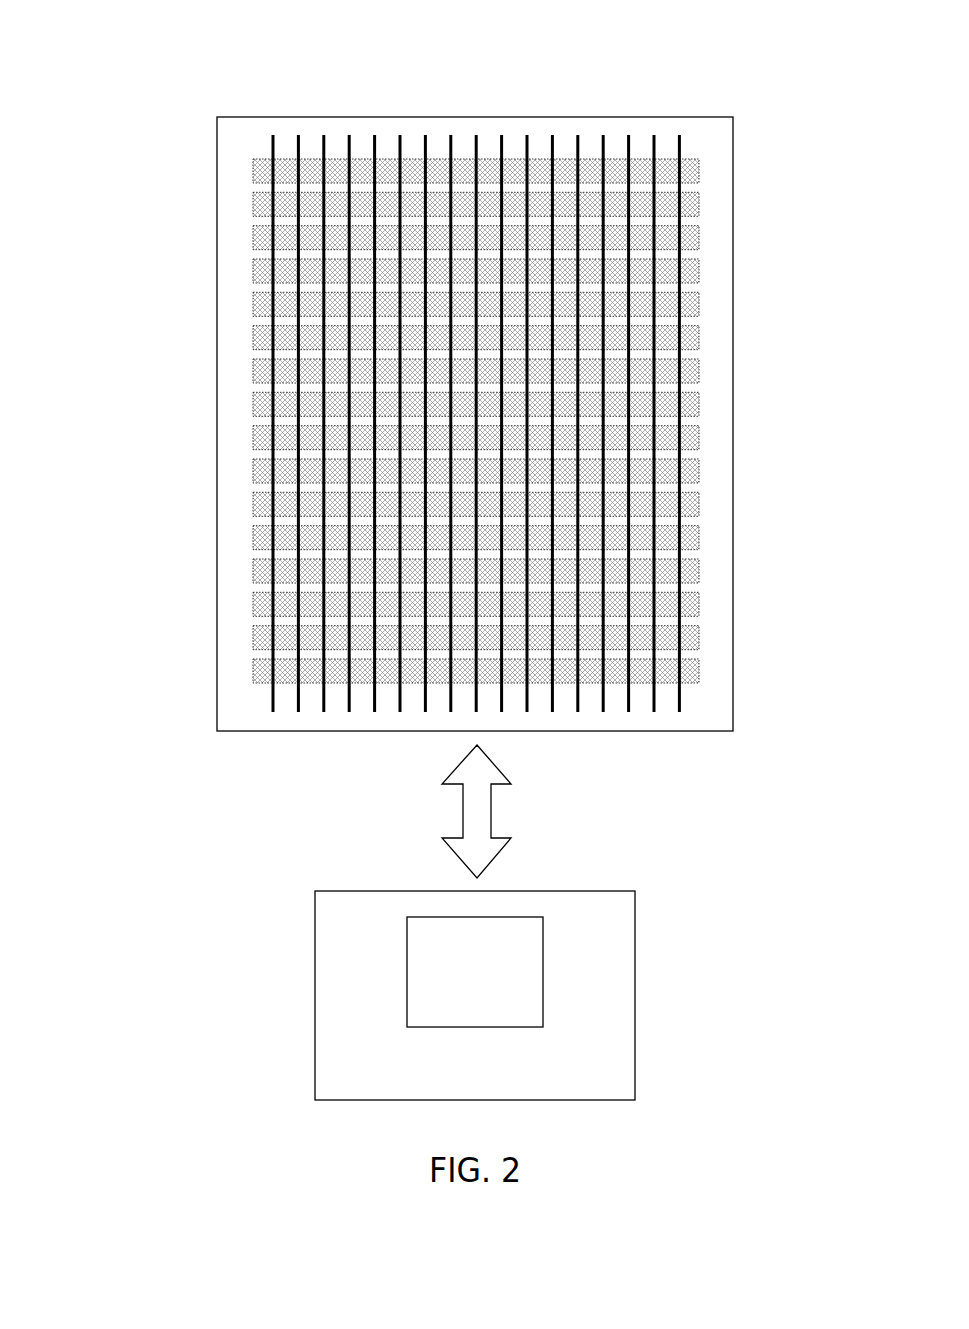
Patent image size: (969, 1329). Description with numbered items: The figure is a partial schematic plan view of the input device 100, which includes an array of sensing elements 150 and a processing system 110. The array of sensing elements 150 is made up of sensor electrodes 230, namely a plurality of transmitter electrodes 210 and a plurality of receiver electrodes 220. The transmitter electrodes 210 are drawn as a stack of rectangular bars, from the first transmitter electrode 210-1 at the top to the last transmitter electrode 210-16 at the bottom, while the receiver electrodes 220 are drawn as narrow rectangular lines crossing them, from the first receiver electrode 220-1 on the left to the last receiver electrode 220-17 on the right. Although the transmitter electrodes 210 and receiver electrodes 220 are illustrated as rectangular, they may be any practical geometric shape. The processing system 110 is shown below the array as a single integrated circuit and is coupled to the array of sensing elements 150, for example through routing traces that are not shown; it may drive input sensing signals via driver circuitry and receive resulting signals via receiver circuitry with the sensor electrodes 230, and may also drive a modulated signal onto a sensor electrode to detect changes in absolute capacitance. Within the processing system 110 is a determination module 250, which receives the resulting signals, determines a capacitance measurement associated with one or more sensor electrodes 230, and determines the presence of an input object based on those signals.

The input device 100 is at (183, 48).
The processing system 110 is at (558, 1075).
The array of sensing elements 150 is at (333, 149).
The transmitter electrodes 210 is at (367, 421).
The transmitter electrode 210-1 is at (253, 170).
The transmitter electrode 210-16 is at (400, 694).
The receiver electrodes 220 is at (519, 356).
The receiver electrode 220-1 is at (274, 142).
The receiver electrode 220-17 is at (729, 373).
The sensor electrodes 230 is at (387, 149).
The determination module 250 is at (456, 1003).